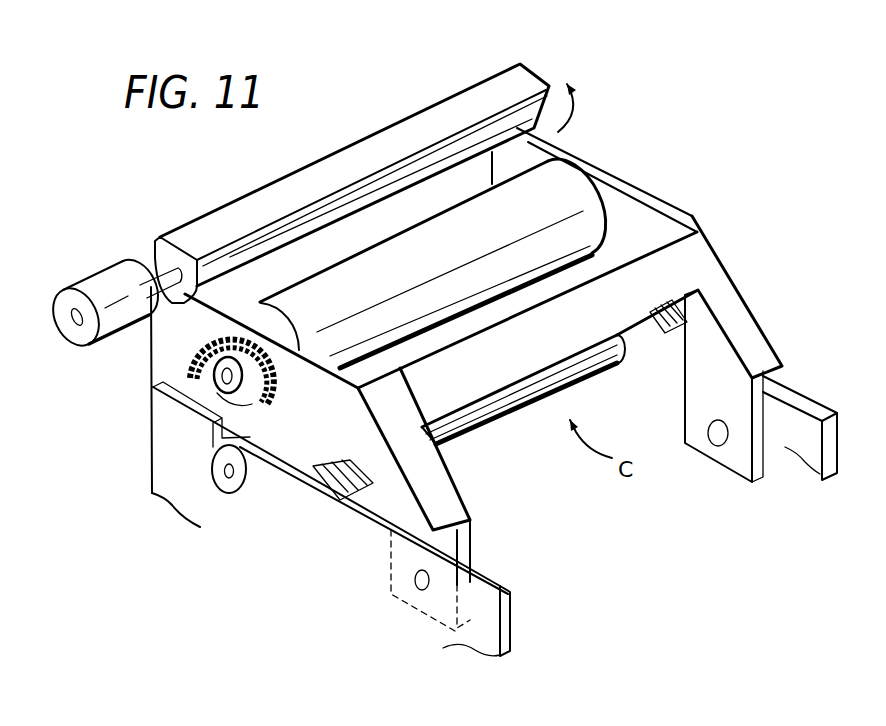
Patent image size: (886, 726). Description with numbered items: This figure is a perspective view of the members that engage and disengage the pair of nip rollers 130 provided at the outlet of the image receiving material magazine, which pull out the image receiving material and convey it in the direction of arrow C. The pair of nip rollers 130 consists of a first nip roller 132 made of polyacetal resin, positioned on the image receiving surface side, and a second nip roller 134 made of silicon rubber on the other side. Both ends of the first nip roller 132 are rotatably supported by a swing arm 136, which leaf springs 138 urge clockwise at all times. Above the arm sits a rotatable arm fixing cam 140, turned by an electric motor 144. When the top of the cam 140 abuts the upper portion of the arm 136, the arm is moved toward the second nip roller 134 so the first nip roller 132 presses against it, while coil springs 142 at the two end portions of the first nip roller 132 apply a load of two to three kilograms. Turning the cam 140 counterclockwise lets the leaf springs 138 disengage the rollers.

The pair of nip rollers 130 is at (518, 413).
The first nip roller 132 is at (583, 197).
The second nip roller 134 is at (595, 372).
The swing arm 136 is at (717, 287).
The leaf springs 138 is at (659, 318).
The arm fixing cam 140 is at (490, 87).
The coil springs 142 is at (183, 350).
The electric motor 144 is at (102, 280).